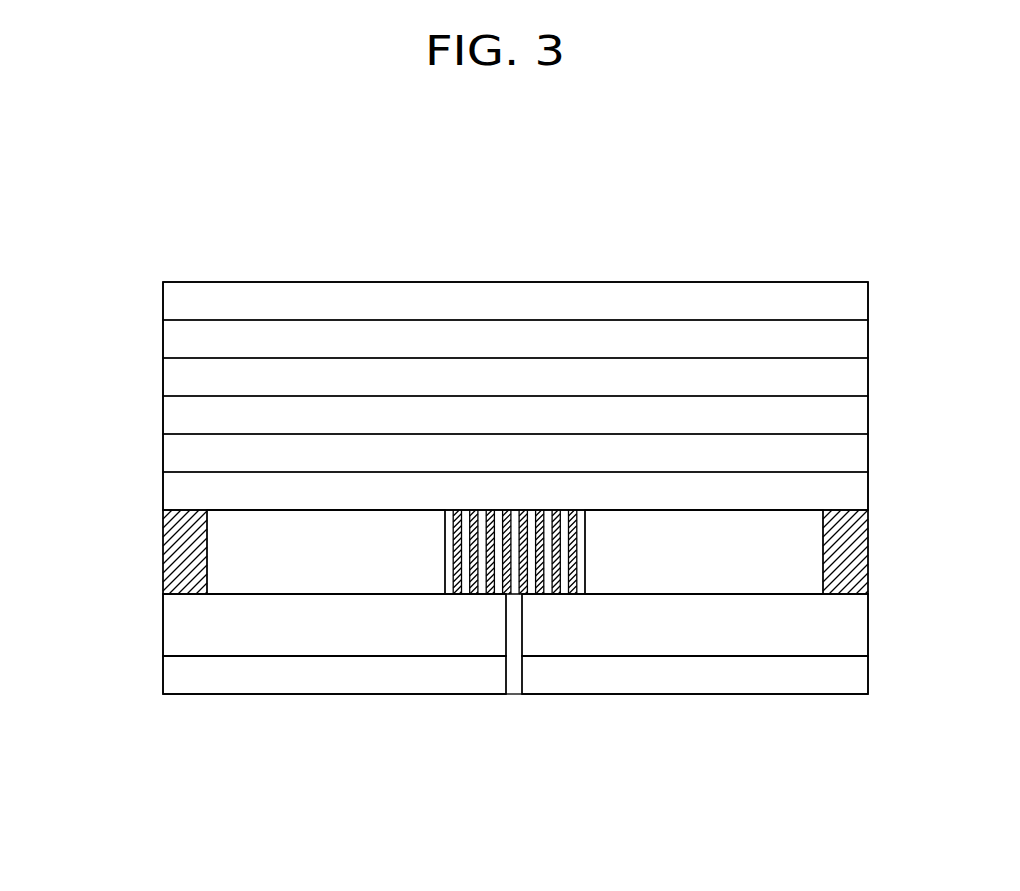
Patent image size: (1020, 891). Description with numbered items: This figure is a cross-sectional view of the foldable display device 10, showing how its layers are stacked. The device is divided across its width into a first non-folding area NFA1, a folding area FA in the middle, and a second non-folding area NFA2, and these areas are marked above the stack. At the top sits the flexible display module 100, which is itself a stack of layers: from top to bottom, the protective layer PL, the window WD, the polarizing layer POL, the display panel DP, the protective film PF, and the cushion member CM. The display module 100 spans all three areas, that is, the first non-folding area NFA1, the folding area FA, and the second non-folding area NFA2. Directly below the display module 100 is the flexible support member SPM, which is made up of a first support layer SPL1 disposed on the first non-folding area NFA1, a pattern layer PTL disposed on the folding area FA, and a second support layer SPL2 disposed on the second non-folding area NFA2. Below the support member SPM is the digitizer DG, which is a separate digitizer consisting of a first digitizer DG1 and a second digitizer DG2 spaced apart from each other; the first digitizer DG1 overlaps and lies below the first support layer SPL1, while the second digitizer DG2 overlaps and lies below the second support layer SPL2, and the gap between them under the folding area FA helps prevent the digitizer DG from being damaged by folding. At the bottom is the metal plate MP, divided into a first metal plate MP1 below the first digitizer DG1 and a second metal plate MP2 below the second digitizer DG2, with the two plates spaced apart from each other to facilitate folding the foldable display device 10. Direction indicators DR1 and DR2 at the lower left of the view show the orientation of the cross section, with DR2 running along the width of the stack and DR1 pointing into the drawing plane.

The foldable display device 10 is at (891, 252).
The display module 100 is at (83, 284).
The protective layer PL is at (168, 298).
The window WD is at (168, 337).
The polarizing layer POL is at (168, 375).
The display panel DP is at (168, 413).
The protective film PF is at (168, 451).
The cushion member CM is at (168, 489).
The support member SPM is at (168, 547).
The first support layer SPL1 is at (407, 583).
The pattern layer PTL is at (484, 597).
The second support layer SPL2 is at (754, 583).
The digitizer DG is at (170, 631).
The metal plate MP is at (170, 673).
The first digitizer DG1 is at (340, 645).
The first metal plate MP1 is at (278, 683).
The second digitizer DG2 is at (688, 645).
The second metal plate MP2 is at (622, 683).
The first non-folding area NFA1 is at (163, 235).
The folding area FA is at (445, 235).
The second non-folding area NFA2 is at (868, 235).
The first direction DR1 is at (155, 834).
The second direction DR2 is at (168, 839).